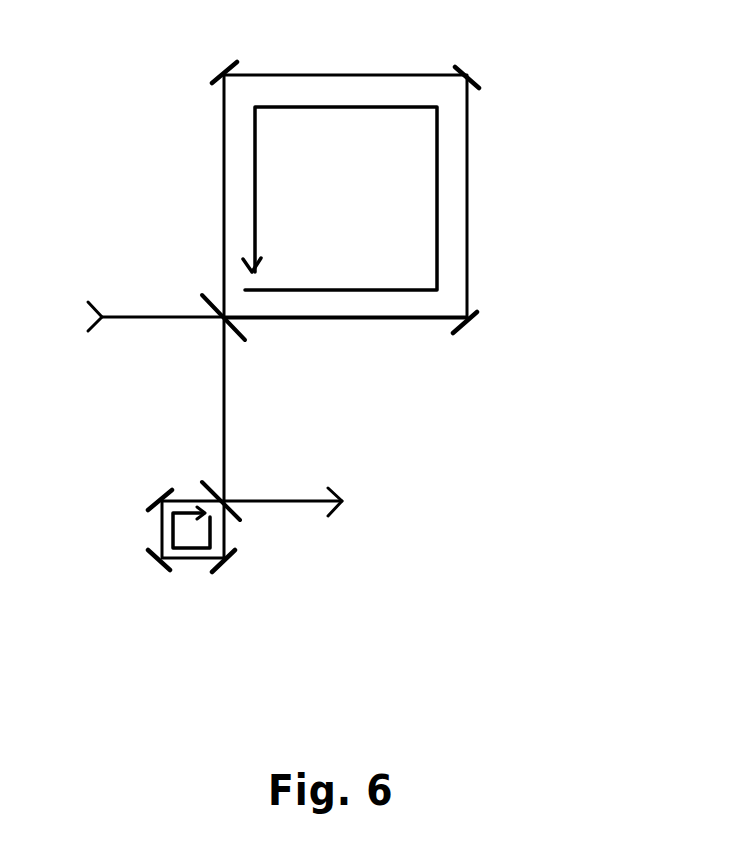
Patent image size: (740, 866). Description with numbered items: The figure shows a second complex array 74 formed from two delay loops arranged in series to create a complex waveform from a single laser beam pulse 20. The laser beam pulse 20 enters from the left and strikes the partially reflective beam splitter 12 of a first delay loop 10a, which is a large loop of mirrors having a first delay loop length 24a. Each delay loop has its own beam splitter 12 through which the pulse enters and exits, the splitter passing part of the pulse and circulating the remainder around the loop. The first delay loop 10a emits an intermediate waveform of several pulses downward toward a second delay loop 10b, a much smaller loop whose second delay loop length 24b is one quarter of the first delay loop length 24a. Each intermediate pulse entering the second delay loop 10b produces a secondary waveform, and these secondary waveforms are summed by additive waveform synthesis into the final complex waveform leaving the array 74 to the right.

The second complex array 74 is at (100, 107).
The first delay loop 10a is at (530, 143).
The second delay loop 10b is at (272, 548).
The beam splitter 12 is at (243, 337).
The laser beam pulse 20 is at (142, 318).
The first delay loop length 24a is at (357, 108).
The second delay loop length 24b is at (182, 512).